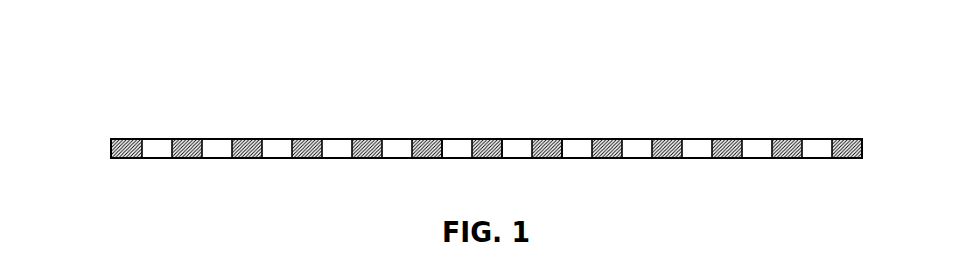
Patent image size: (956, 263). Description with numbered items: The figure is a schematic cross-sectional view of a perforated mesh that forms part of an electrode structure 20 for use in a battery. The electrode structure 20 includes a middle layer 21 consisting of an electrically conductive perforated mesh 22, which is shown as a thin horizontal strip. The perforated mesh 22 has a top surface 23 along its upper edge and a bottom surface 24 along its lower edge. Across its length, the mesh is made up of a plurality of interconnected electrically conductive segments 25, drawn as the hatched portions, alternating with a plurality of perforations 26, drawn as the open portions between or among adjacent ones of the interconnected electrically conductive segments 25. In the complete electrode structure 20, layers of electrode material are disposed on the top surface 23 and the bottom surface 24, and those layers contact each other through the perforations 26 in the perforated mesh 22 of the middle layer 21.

The electrode structure 20 is at (470, 133).
The middle layer 21 is at (218, 57).
The perforated mesh 22 is at (490, 144).
The top surface 23 is at (782, 102).
The bottom surface 24 is at (782, 188).
The interconnected electrically conductive segments 25 is at (423, 140).
The perforations 26 is at (575, 147).